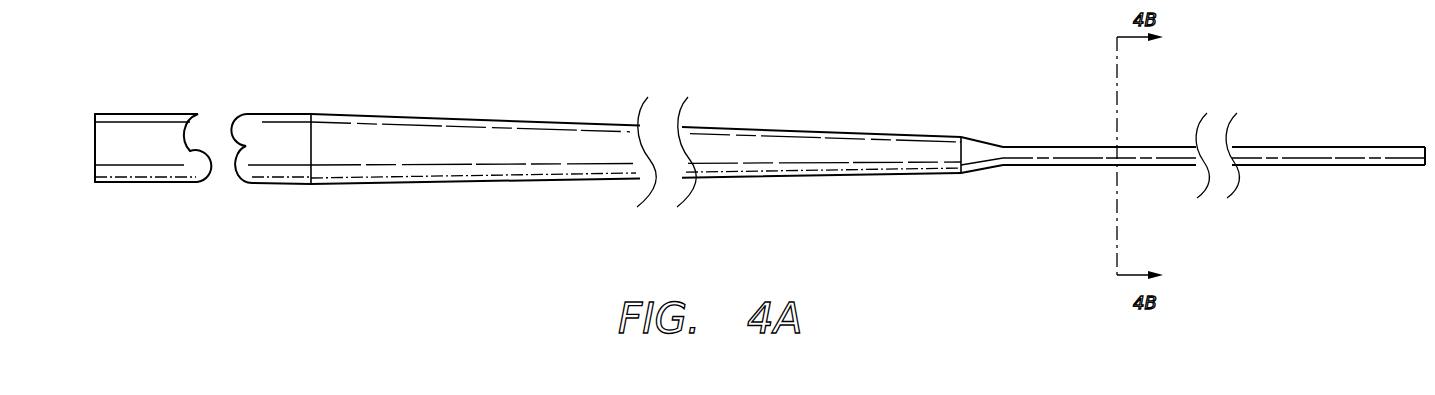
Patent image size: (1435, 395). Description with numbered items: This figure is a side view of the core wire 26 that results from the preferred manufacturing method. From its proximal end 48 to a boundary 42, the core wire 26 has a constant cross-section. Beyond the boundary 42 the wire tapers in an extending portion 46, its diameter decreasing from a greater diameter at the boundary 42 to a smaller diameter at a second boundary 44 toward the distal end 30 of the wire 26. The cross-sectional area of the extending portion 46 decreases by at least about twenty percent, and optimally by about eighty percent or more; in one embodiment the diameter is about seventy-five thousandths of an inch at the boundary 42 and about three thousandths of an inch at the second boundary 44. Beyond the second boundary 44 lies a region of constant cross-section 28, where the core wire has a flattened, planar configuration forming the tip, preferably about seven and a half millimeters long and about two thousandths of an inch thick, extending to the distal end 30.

The core wire 26 is at (292, 184).
The region of constant cross-section 28 is at (1310, 147).
The distal end 30 is at (1428, 127).
The boundary 42 is at (311, 114).
The second boundary 44 is at (961, 137).
The extending portion 46 is at (626, 125).
The proximal end 48 is at (92, 88).